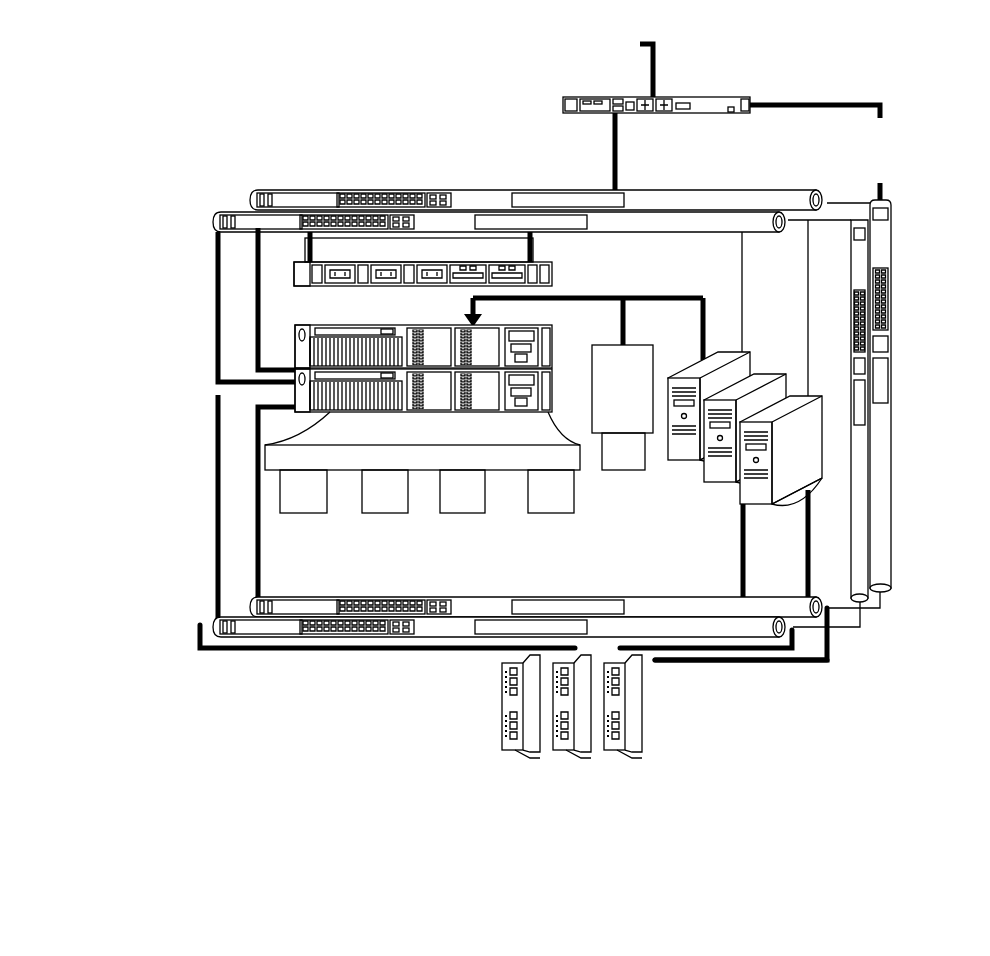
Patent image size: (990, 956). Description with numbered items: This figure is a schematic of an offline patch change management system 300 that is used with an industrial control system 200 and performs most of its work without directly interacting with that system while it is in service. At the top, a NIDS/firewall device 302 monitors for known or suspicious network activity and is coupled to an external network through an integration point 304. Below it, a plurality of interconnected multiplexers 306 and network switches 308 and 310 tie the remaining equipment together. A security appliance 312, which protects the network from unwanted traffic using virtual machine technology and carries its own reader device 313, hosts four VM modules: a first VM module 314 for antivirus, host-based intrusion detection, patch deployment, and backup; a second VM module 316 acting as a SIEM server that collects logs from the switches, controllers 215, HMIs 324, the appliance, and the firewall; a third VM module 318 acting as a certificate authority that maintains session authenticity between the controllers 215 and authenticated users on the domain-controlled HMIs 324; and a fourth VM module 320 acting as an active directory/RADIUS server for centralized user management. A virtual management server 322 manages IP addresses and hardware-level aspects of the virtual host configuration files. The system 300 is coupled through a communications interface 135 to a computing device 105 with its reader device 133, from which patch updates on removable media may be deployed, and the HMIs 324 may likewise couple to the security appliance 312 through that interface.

The patch change management system 300 is at (203, 100).
The NIDS/firewall device 302 is at (592, 113).
The integration point 304 is at (650, 80).
The multiplexers 306 is at (250, 205).
The network switch 308 is at (878, 600).
The network switch 310 is at (800, 615).
The security appliance 312 is at (335, 364).
The reader device 313 is at (296, 345).
The first virtual machine module 314 is at (280, 497).
The second VM module 316 is at (365, 513).
The third VM module 318 is at (440, 513).
The fourth VM module 320 is at (528, 513).
The virtual management server 322 is at (290, 275).
The human machine interfaces 324 is at (765, 478).
The communications interface 135 is at (648, 296).
The computing device 105 is at (607, 400).
The reader device 133 is at (607, 462).
The controllers 215 is at (577, 777).
The industrial control system 200 is at (703, 793).